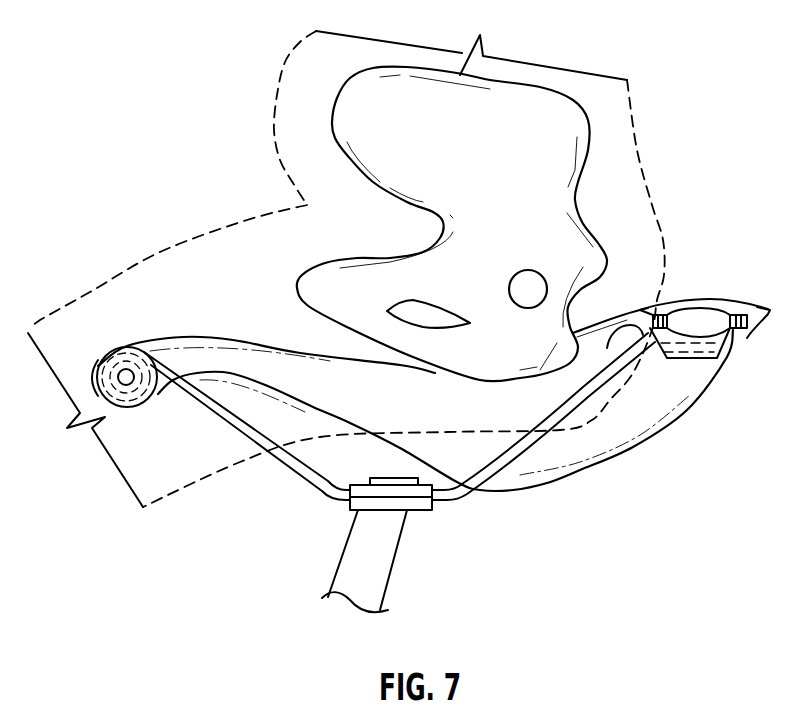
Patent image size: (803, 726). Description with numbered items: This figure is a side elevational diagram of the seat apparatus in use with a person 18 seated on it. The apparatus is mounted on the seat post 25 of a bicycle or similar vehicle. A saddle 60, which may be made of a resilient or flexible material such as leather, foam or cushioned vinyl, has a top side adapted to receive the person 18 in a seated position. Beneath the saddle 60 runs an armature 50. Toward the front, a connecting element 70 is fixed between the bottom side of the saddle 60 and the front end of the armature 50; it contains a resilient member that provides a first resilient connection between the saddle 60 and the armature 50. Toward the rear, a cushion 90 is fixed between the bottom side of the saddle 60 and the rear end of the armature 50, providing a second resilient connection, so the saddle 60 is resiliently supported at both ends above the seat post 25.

The person 18 is at (247, 221).
The seat post 25 is at (378, 553).
The armature 50 is at (503, 455).
The saddle 60 is at (227, 353).
The connecting element 70 is at (137, 334).
The cushion 90 is at (705, 296).